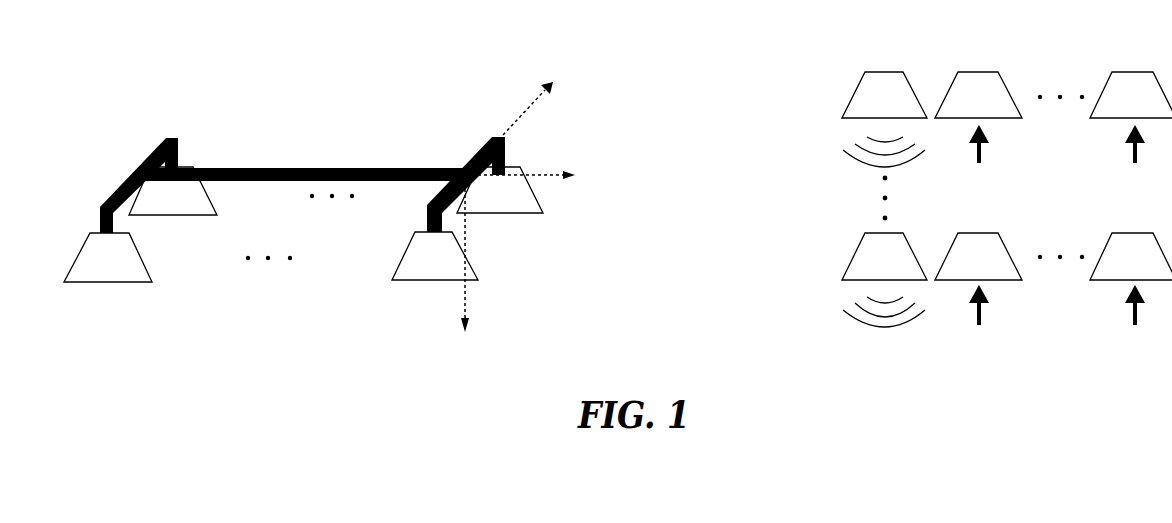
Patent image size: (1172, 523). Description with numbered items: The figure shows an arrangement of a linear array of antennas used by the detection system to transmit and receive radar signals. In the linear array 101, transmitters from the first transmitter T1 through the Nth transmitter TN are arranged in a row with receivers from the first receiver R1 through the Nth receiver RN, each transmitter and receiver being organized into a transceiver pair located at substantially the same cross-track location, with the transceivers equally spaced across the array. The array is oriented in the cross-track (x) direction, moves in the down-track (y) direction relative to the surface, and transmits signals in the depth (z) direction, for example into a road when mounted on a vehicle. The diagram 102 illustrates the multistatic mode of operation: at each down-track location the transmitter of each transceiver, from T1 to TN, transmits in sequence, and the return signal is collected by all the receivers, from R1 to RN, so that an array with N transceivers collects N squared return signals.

The linear array 101 is at (401, 194).
The diagram 102 is at (1042, 358).
The transmitter T1 is at (173, 191).
The transmitter TN is at (500, 190).
The receiver R1 is at (108, 257).
The receiver RN is at (435, 256).